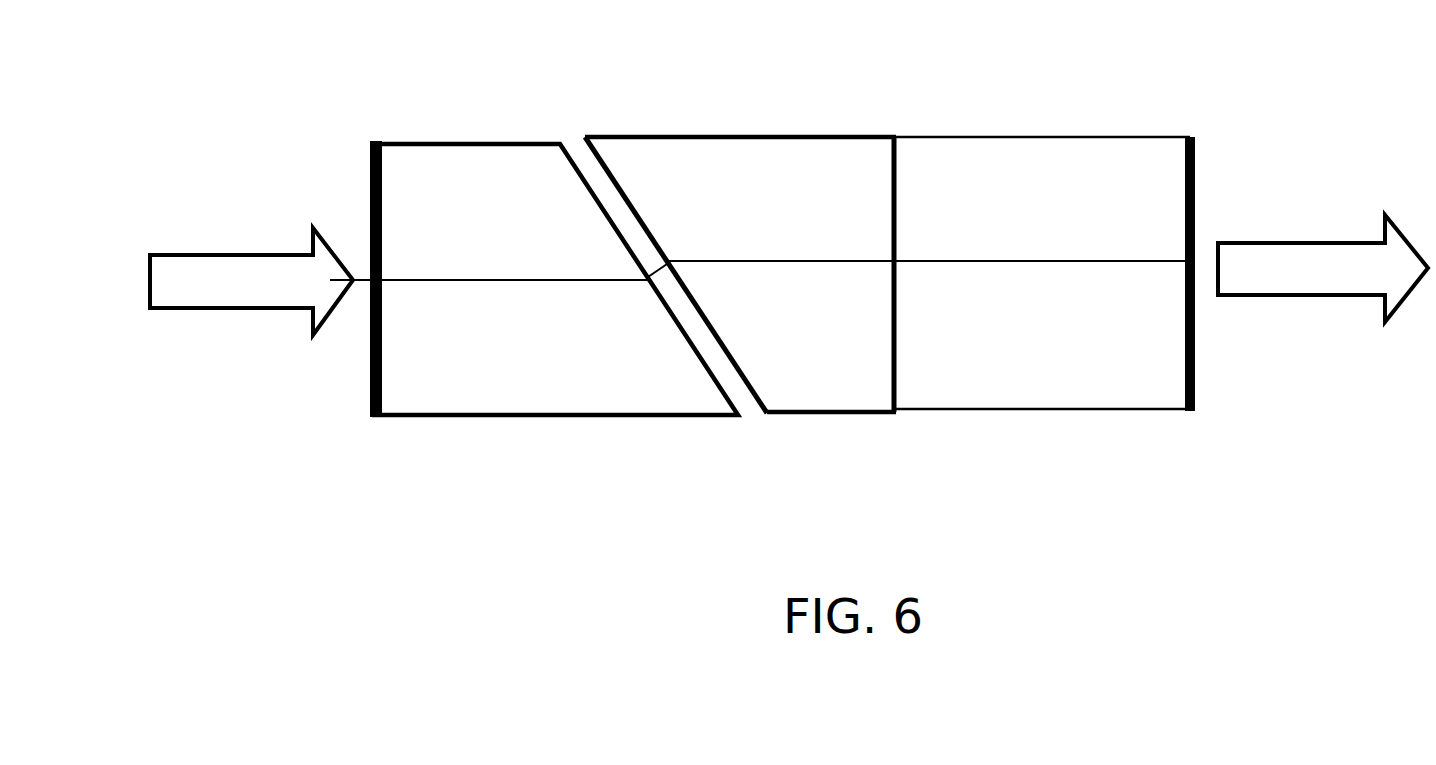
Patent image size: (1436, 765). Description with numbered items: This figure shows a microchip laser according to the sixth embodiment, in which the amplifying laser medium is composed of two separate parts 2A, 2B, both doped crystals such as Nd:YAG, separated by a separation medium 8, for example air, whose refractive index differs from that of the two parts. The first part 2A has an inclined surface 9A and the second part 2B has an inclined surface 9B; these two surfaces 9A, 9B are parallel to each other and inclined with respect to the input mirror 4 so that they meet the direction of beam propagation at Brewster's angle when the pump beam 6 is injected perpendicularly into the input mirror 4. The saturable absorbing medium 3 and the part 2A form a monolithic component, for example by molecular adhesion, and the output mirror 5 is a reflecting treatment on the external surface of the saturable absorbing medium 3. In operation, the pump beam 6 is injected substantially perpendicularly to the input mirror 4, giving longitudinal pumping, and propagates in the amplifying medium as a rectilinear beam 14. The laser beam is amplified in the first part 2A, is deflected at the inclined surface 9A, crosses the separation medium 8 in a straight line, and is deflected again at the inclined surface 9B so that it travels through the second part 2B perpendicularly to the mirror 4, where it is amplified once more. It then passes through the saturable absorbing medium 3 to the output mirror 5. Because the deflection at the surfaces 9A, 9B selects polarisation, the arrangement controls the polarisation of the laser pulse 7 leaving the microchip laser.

The first part of the amplifying laser medium 2A is at (502, 383).
The second part of the amplifying laser medium 2B is at (783, 385).
The saturable absorbing medium 3 is at (1003, 175).
The input mirror 4 is at (370, 190).
The output mirror 5 is at (1192, 363).
The pump beam 6 is at (208, 293).
The laser pulse 7 is at (1277, 282).
The separation medium 8 is at (598, 175).
The inclined surface of part 2A 9A is at (707, 365).
The inclined surface of part 2B 9B is at (630, 197).
The rectilinear beam 14 is at (540, 270).